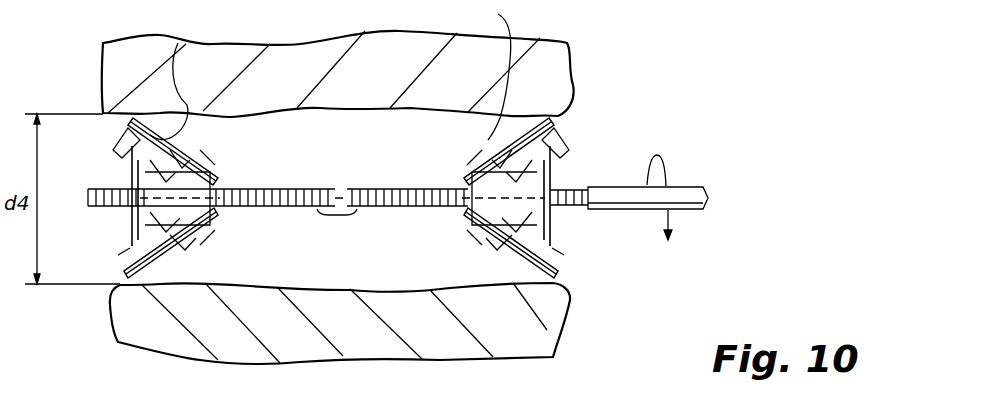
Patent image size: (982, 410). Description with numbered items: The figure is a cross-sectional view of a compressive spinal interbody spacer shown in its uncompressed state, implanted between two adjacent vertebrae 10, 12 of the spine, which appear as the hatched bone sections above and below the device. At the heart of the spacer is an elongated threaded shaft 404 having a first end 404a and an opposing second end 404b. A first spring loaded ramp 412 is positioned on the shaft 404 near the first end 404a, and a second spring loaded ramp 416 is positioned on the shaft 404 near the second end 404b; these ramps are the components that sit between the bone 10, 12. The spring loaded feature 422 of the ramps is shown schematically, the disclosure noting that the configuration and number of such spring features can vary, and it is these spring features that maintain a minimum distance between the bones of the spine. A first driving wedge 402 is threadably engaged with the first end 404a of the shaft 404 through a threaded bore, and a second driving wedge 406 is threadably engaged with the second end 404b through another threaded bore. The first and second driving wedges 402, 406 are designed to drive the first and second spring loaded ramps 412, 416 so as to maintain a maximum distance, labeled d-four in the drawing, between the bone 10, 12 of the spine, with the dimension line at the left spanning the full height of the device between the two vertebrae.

The vertebra 10 is at (533, 76).
The vertebra 12 is at (513, 330).
The first driving wedge 402 is at (542, 218).
The threaded shaft 404 is at (285, 192).
The first end of shaft 404a is at (575, 190).
The second end of shaft 404b is at (100, 194).
The second driving wedge 406 is at (128, 224).
The first spring loaded ramp 412 is at (486, 73).
The second spring loaded ramp 416 is at (186, 44).
The spring feature 422 is at (690, 200).